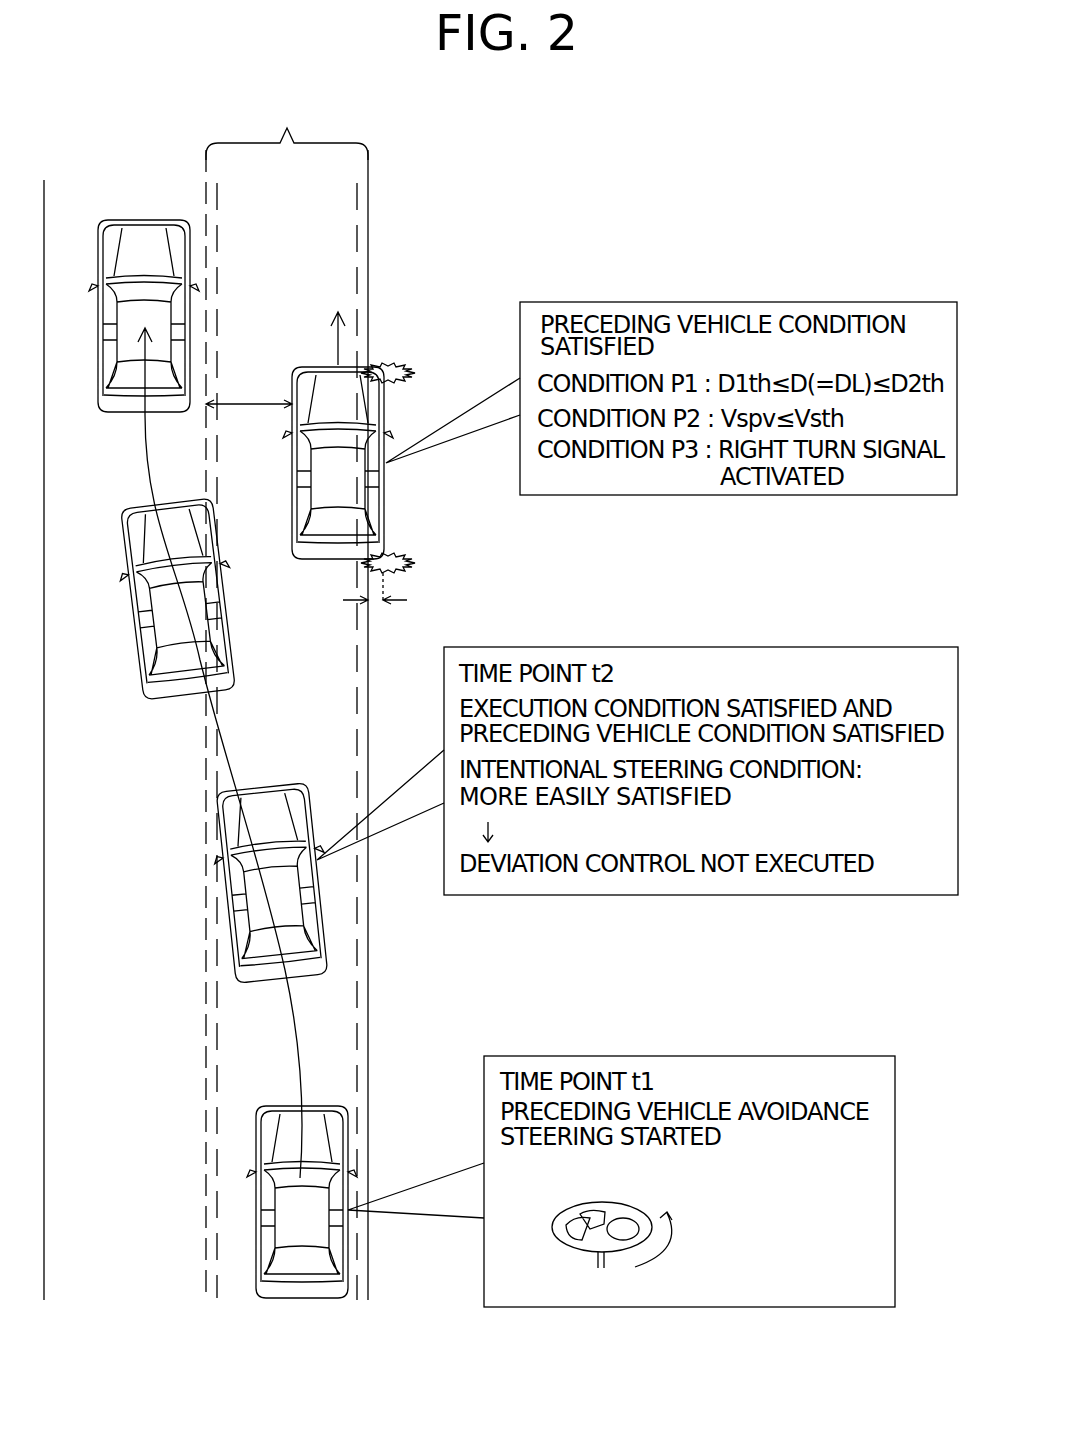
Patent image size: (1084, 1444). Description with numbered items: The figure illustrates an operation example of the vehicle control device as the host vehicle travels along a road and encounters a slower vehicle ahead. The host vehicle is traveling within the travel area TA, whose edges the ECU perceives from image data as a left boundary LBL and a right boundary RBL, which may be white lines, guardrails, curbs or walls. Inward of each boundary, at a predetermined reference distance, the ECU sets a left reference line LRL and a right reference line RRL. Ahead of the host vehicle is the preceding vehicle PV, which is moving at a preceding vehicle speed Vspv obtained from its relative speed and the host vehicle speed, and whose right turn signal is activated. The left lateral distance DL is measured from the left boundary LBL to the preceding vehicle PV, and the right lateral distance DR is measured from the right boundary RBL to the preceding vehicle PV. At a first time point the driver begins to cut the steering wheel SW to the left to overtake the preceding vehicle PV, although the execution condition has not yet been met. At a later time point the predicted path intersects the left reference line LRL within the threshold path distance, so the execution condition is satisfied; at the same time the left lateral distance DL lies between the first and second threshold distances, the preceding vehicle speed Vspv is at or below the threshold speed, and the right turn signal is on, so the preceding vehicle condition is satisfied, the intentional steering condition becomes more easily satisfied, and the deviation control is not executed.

The travel area TA is at (287, 125).
The preceding vehicle PV is at (384, 500).
The left lateral distance DL is at (249, 390).
The right lateral distance DR is at (376, 607).
The preceding vehicle speed Vspv is at (320, 324).
The steering wheel SW is at (633, 1212).
The left boundary LBL is at (206, 1005).
The left reference line LRL is at (217, 1057).
The right boundary RBL is at (368, 1005).
The right reference line RRL is at (357, 1057).